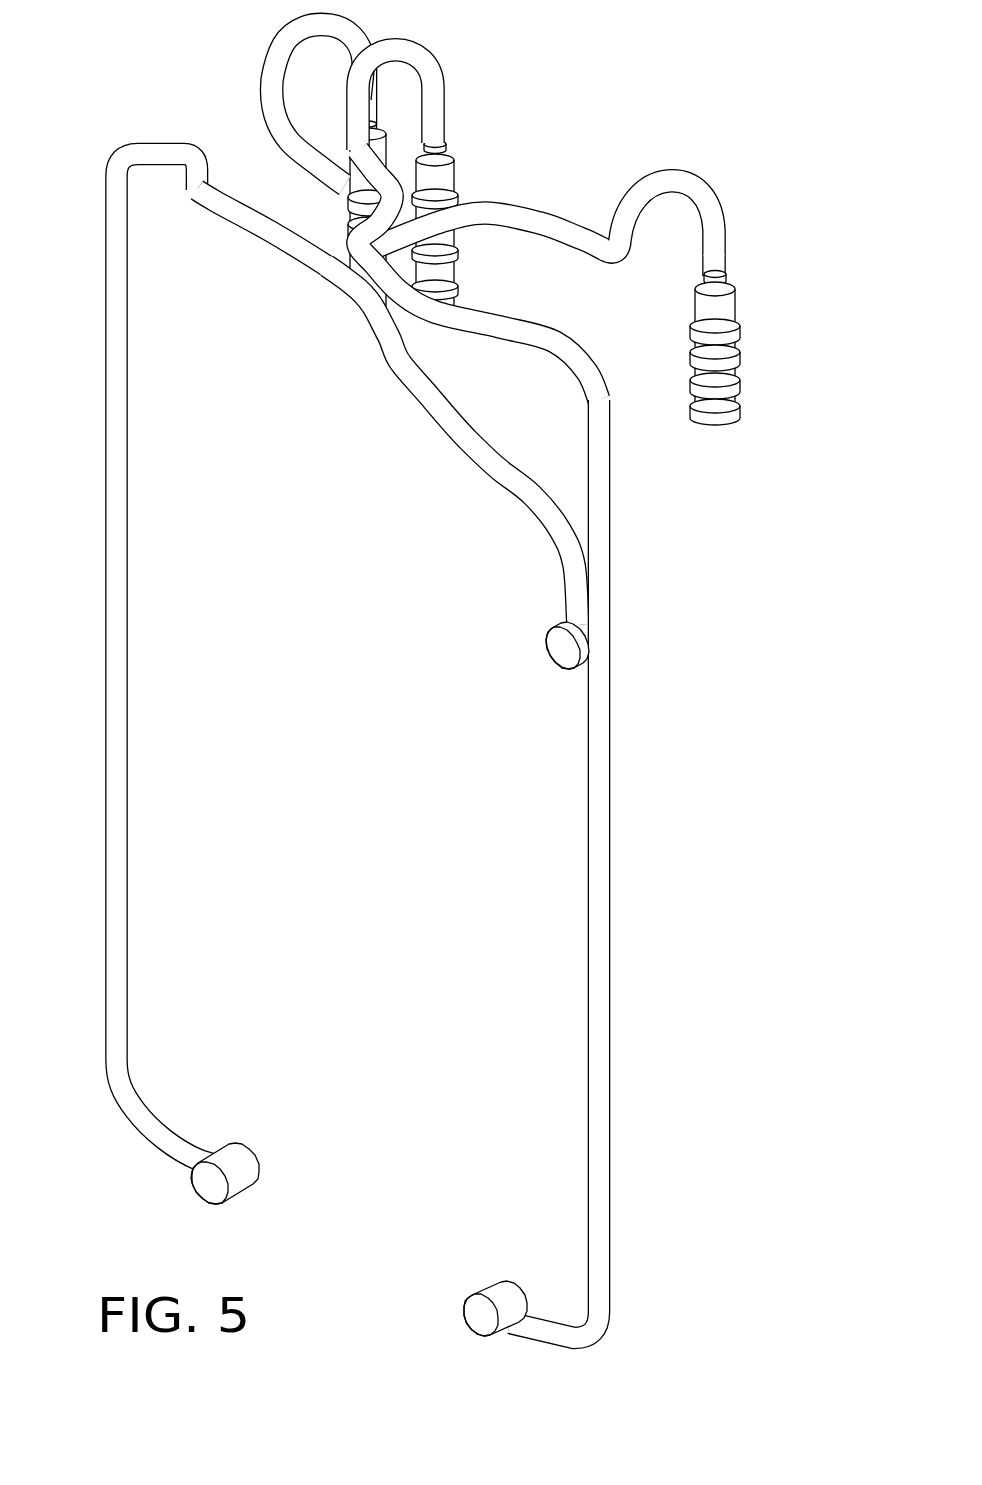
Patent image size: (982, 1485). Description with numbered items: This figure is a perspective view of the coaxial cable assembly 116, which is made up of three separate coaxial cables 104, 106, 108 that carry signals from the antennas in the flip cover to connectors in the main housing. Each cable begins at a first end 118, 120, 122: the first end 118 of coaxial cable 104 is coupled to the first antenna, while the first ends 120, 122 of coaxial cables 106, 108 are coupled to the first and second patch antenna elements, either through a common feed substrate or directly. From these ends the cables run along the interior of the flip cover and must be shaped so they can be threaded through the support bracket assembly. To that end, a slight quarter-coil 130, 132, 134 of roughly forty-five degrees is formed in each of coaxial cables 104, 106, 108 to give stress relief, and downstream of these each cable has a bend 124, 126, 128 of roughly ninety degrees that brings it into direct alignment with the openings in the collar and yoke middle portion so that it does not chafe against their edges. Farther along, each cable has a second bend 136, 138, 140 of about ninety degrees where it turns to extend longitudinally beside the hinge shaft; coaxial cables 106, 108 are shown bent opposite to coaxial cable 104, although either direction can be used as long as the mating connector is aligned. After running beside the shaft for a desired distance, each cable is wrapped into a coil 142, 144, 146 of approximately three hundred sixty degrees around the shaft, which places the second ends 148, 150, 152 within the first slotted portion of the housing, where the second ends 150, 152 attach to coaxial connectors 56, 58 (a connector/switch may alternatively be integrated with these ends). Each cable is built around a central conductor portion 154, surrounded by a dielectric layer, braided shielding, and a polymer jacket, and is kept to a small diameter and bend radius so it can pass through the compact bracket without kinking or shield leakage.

The coaxial connector 56 is at (348, 218).
The coaxial connector 58 is at (440, 258).
The coaxial cable 104 is at (531, 508).
The coaxial cable 106 is at (125, 800).
The coaxial cable 108 is at (605, 1040).
The coaxial cable assembly 116 is at (597, 249).
The first end 118 is at (562, 650).
The first end 120 is at (245, 1160).
The first end 122 is at (480, 1310).
The bend 124 is at (400, 308).
The bend 126 is at (326, 235).
The bend 128 is at (341, 284).
The quarter-coil 130 is at (450, 447).
The quarter-coil 132 is at (180, 197).
The quarter-coil 134 is at (501, 334).
The second bend 136 is at (511, 238).
The second bend 138 is at (401, 160).
The second bend 140 is at (352, 193).
The coil 142 is at (695, 160).
The coil 144 is at (270, 41).
The coil 146 is at (437, 40).
The second end 148 is at (735, 250).
The second end 150 is at (380, 106).
The second end 152 is at (447, 128).
The conductor portion 154 is at (715, 345).